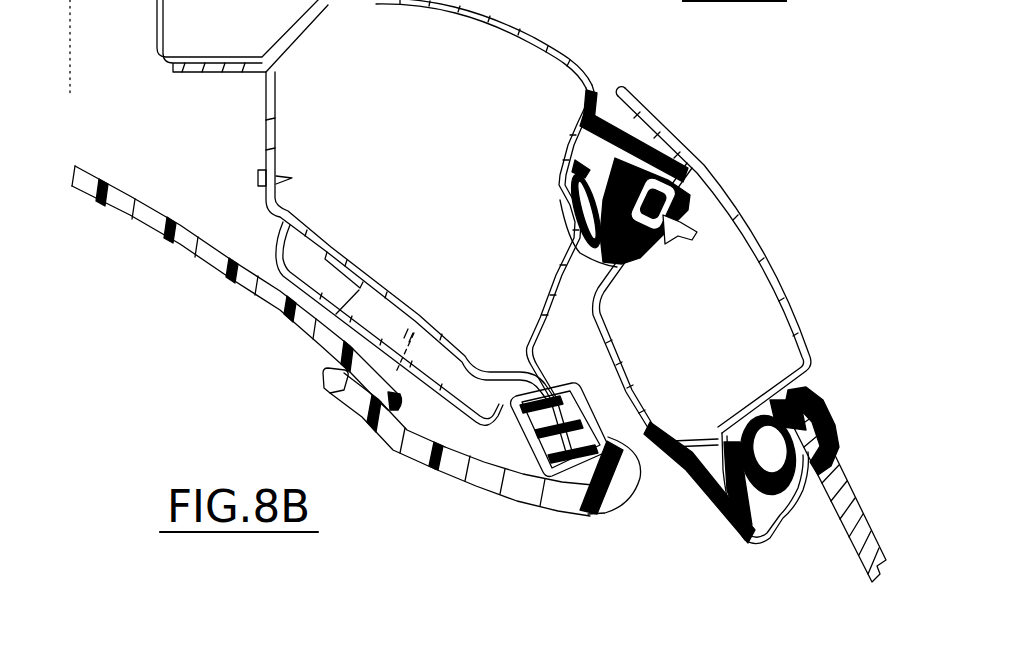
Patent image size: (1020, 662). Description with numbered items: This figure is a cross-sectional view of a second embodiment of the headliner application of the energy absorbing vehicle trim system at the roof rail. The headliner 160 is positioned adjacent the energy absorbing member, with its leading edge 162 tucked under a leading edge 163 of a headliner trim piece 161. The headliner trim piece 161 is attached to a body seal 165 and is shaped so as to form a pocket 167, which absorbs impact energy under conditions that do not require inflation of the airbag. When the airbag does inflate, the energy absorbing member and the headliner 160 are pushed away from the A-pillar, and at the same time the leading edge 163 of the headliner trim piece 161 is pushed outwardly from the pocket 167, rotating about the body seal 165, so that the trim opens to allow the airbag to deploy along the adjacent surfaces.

The headliner 160 is at (188, 237).
The headliner trim piece 161 is at (418, 457).
The leading edge 162 is at (377, 400).
The leading edge 163 is at (337, 378).
The body seal 165 is at (568, 477).
The pocket 167 is at (503, 450).